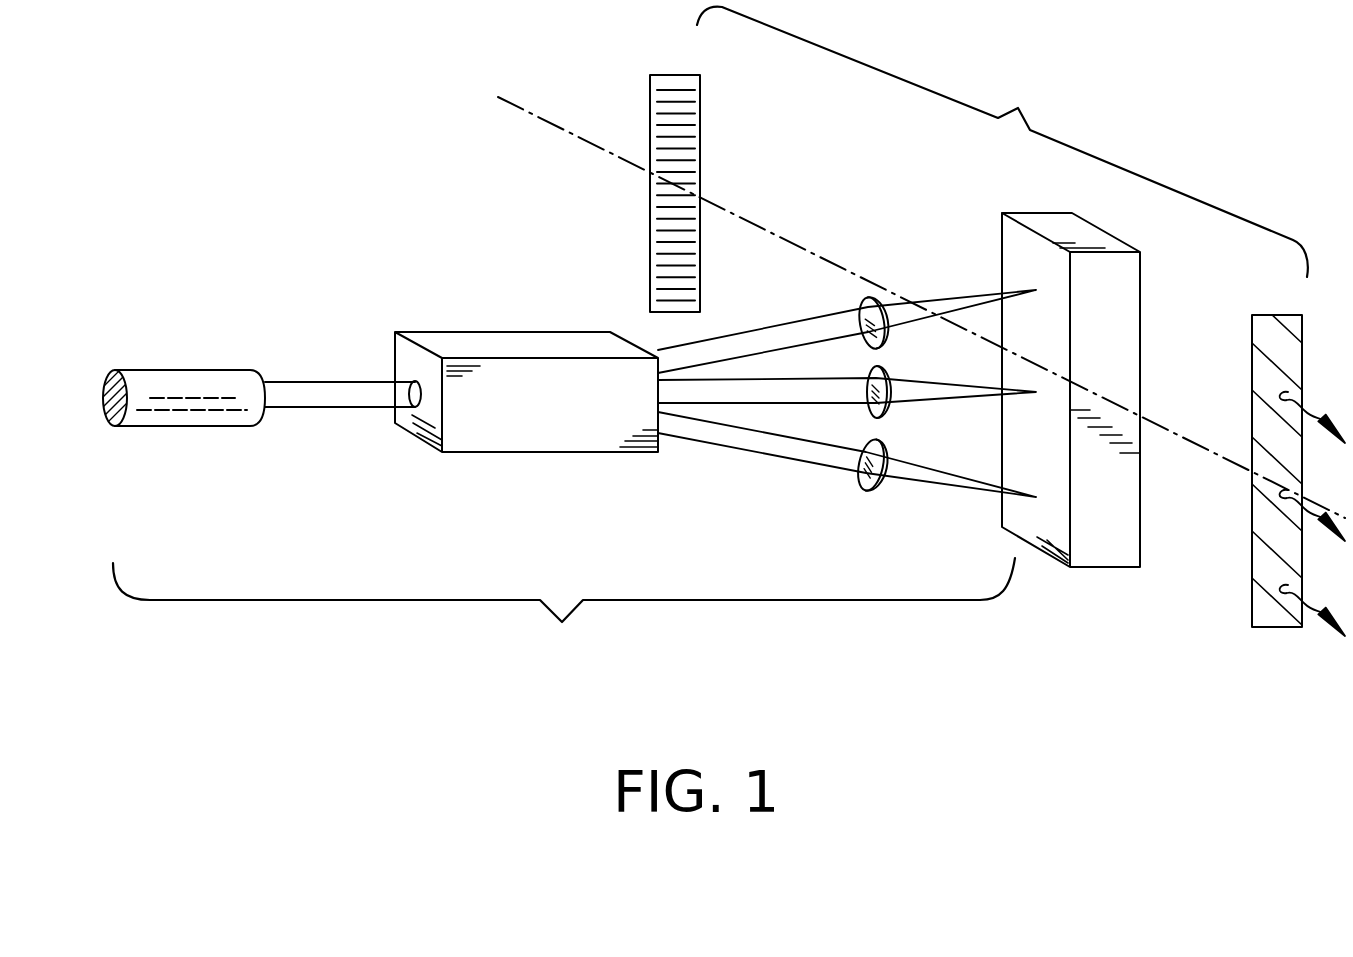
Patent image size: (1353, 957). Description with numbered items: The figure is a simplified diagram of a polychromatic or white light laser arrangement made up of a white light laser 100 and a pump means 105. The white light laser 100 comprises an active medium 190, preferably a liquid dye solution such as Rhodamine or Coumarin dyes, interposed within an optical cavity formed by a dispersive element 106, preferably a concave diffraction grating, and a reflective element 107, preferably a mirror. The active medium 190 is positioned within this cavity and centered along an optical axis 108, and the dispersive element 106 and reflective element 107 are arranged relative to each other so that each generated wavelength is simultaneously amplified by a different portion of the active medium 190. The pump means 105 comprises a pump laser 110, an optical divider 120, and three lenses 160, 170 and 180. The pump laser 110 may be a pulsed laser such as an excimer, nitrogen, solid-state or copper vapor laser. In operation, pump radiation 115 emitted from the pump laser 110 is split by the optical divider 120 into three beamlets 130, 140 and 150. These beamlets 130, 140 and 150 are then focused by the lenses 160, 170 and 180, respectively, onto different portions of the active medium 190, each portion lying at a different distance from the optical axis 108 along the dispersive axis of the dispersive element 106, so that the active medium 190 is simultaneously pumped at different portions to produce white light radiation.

The polychromatic or white light laser 100 is at (1002, 142).
The pump means 105 is at (564, 610).
The dispersive element 106 is at (662, 98).
The reflective element 107 is at (1270, 612).
The optical axis 108 is at (798, 244).
The pump laser 110 is at (188, 382).
The pump radiation 115 is at (335, 390).
The optical divider 120 is at (460, 342).
The beamlet 130 is at (810, 325).
The beamlet 140 is at (762, 390).
The beamlet 150 is at (830, 452).
The lens 160 is at (880, 298).
The lens 170 is at (883, 368).
The lens 180 is at (883, 453).
The active medium 190 is at (1030, 512).